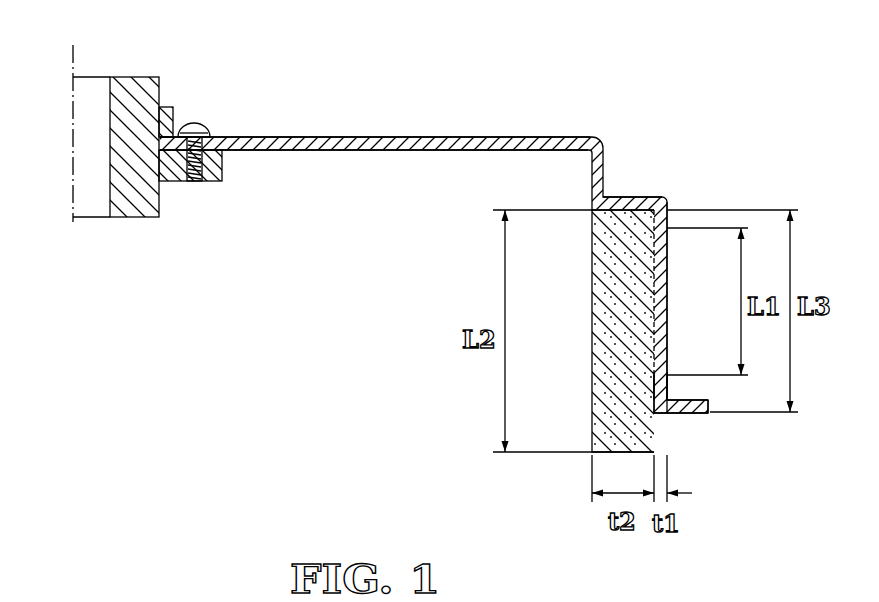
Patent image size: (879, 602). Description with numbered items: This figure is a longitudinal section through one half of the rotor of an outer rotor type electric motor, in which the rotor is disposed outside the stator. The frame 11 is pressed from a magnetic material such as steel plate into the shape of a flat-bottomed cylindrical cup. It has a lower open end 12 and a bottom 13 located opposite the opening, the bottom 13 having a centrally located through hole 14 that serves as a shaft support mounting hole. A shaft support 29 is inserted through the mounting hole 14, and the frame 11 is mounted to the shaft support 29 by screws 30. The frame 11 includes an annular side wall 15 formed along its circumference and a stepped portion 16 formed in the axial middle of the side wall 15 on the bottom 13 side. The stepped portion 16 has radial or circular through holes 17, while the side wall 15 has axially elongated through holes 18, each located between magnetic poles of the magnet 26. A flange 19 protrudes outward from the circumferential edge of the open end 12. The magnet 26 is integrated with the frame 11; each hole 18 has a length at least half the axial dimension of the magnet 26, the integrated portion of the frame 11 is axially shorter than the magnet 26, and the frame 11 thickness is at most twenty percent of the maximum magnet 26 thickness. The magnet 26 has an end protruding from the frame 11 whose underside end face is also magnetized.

The frame 11 is at (580, 127).
The open end 12 is at (367, 410).
The bottom 13 is at (393, 142).
The through hole 14 is at (150, 124).
The side wall 15 is at (663, 388).
The stepped portion 16 is at (613, 203).
The through holes 17 is at (645, 203).
The through holes 18 is at (658, 370).
The flange 19 is at (692, 406).
The magnet 26 is at (592, 313).
The shaft support 29 is at (125, 77).
The screws 30 is at (194, 125).